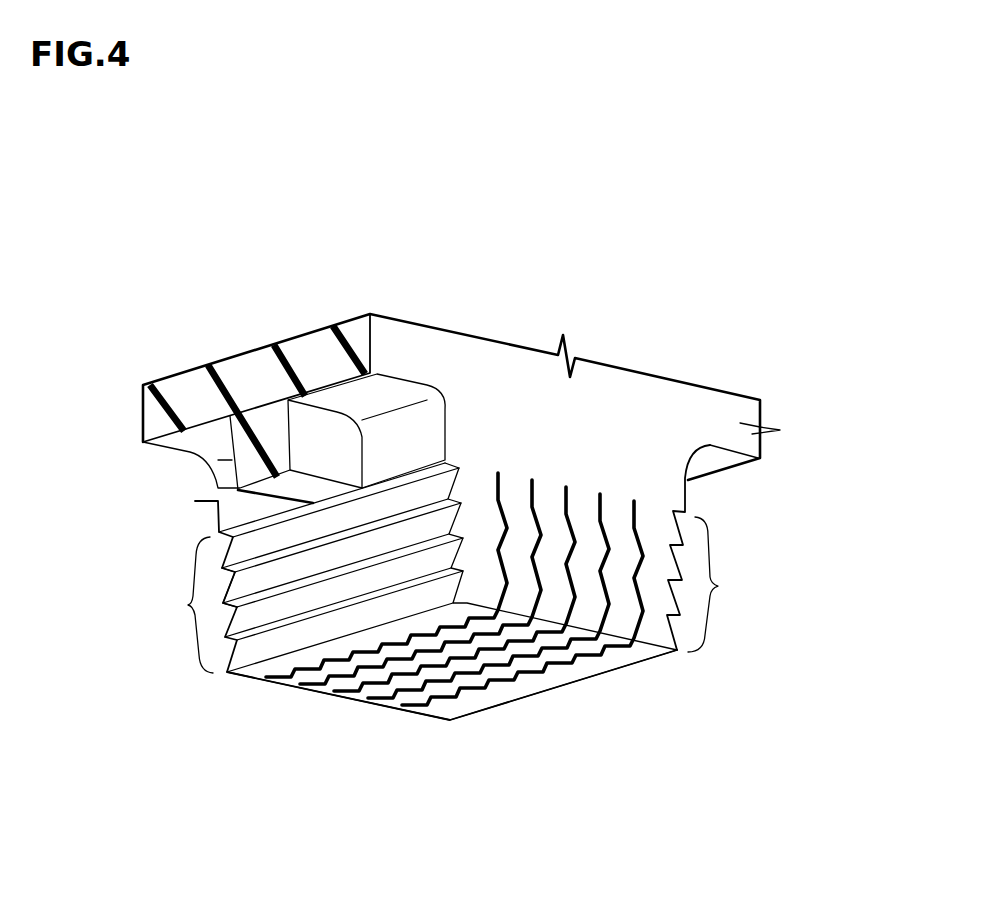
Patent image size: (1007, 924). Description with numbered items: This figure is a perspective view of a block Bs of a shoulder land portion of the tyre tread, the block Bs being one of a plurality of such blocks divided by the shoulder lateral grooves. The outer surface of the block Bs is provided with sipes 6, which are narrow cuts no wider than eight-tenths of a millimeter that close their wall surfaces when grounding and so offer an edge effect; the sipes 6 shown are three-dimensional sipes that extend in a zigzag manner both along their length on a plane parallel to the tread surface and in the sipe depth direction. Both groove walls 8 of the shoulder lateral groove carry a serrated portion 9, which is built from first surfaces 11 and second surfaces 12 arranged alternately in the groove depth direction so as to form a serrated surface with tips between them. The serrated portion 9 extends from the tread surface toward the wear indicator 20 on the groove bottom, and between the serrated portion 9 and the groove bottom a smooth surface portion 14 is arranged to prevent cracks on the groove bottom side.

The block Bs is at (632, 405).
The smooth surface portion 14 is at (408, 442).
The wear indicator 20 is at (295, 486).
The groove wall 8 is at (449, 618).
The serrated portion 9 is at (451, 595).
The second surface 12 is at (270, 623).
The first surface 11 is at (338, 622).
The sipe 6 is at (498, 663).